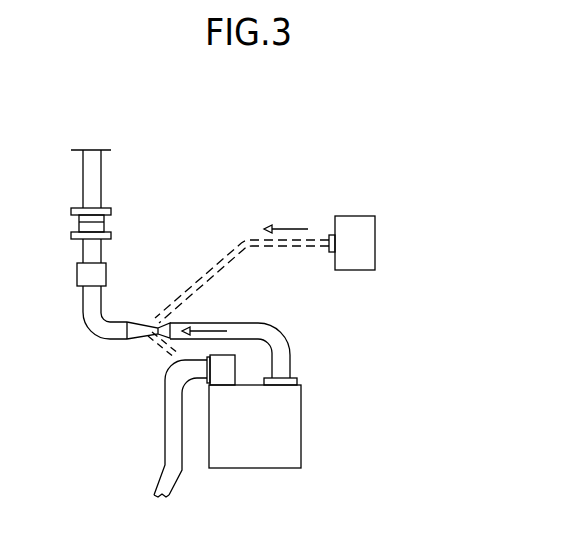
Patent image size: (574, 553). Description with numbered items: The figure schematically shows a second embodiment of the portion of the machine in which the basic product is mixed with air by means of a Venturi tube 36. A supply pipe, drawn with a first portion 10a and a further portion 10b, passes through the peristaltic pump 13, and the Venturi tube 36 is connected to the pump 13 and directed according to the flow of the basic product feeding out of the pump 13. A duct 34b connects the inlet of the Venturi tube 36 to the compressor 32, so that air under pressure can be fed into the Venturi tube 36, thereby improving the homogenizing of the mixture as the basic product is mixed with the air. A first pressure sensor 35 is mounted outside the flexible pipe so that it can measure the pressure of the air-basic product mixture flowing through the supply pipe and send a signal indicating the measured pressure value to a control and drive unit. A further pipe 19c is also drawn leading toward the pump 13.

The downstream portion of exhaust pipe 10a is at (171, 443).
The upstream portion of exhaust pipe 10b is at (88, 177).
The canister 13 is at (305, 442).
The purge pipe 19c is at (277, 348).
The pump 32 is at (375, 242).
The passage 34b is at (248, 242).
The valve 35 is at (88, 273).
The venturi ejector 36 is at (129, 340).